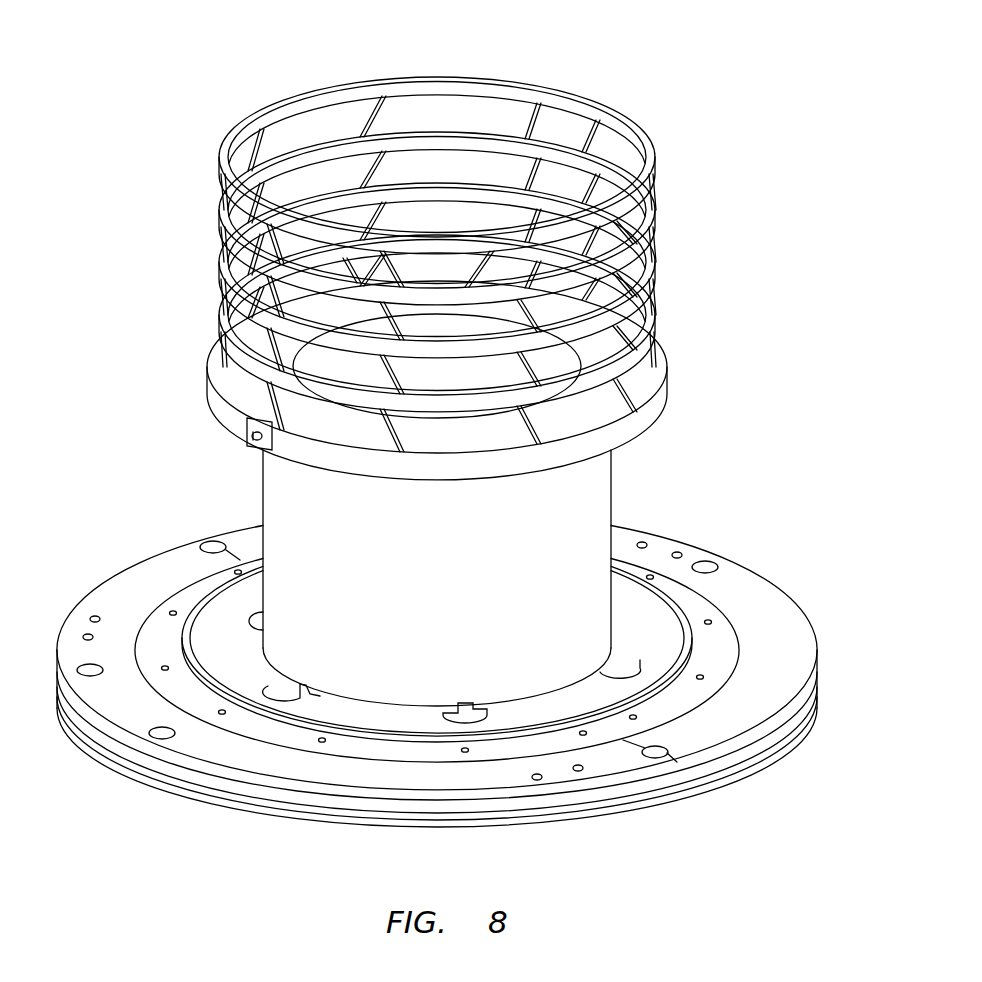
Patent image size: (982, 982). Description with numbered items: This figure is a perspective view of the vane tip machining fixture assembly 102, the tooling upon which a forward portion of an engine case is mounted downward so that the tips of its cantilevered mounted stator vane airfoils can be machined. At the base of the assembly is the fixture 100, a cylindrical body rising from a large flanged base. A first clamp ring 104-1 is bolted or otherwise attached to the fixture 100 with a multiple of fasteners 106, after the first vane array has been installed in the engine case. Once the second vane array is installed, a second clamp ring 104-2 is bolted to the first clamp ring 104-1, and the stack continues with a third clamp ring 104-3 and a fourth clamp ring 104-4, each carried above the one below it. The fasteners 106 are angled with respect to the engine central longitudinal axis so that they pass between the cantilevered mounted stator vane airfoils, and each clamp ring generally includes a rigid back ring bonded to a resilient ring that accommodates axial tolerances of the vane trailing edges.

The fixture 100 is at (612, 487).
The vane tip machining fixture assembly 102 is at (800, 416).
The first clamp ring 104-1 is at (655, 317).
The second clamp ring 104-2 is at (655, 272).
The third clamp ring 104-3 is at (655, 236).
The fourth clamp ring 104-4 is at (647, 143).
The fasteners 106 is at (522, 115).